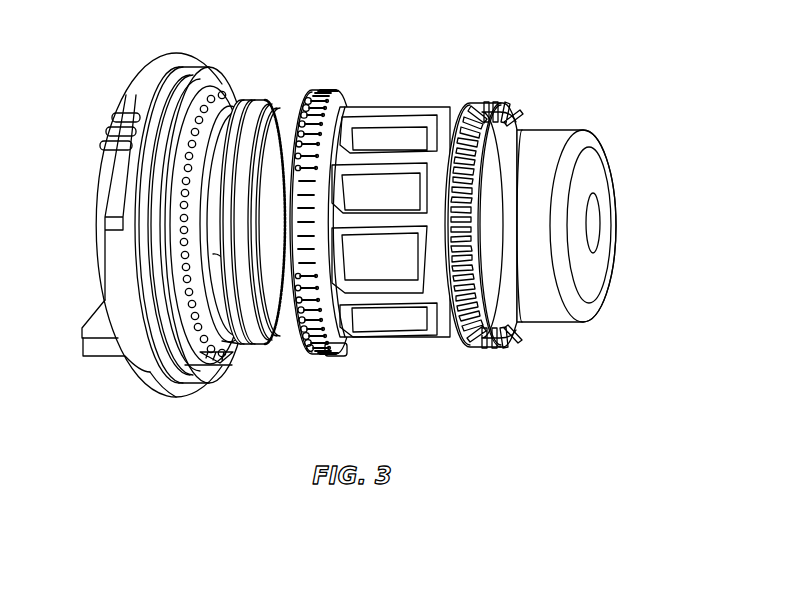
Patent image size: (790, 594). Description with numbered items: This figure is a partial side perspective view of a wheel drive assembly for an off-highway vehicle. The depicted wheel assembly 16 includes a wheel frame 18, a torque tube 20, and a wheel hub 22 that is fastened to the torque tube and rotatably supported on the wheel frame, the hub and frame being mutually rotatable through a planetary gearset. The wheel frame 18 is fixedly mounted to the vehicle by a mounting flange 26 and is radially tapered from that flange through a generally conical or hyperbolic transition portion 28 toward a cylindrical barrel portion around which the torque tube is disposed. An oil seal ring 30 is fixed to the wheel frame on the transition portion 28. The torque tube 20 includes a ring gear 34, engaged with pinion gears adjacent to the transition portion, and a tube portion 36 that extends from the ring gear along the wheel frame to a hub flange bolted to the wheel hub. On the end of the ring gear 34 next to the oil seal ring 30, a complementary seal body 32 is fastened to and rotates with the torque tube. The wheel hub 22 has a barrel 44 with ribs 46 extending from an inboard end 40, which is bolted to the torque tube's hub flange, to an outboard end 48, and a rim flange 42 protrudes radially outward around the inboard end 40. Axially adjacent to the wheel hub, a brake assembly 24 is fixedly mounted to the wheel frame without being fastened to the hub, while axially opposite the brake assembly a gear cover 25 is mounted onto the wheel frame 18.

The wheel assembly 16 is at (537, 84).
The wheel frame 18 is at (165, 63).
The torque tube 20 is at (246, 100).
The wheel hub 22 is at (395, 108).
The brake assembly 24 is at (596, 214).
The gear cover 25 is at (101, 264).
The mounting flange 26 is at (163, 383).
The transition portion 28 is at (193, 83).
The oil seal ring 30 is at (187, 364).
The seal body 32 is at (203, 354).
The ring gear 34 is at (233, 341).
The tube portion 36 is at (276, 316).
The inboard end 40 is at (348, 339).
The rim flange 42 is at (308, 354).
The barrel 44 is at (380, 316).
The ribs 46 is at (405, 288).
The outboard end 48 is at (115, 188).